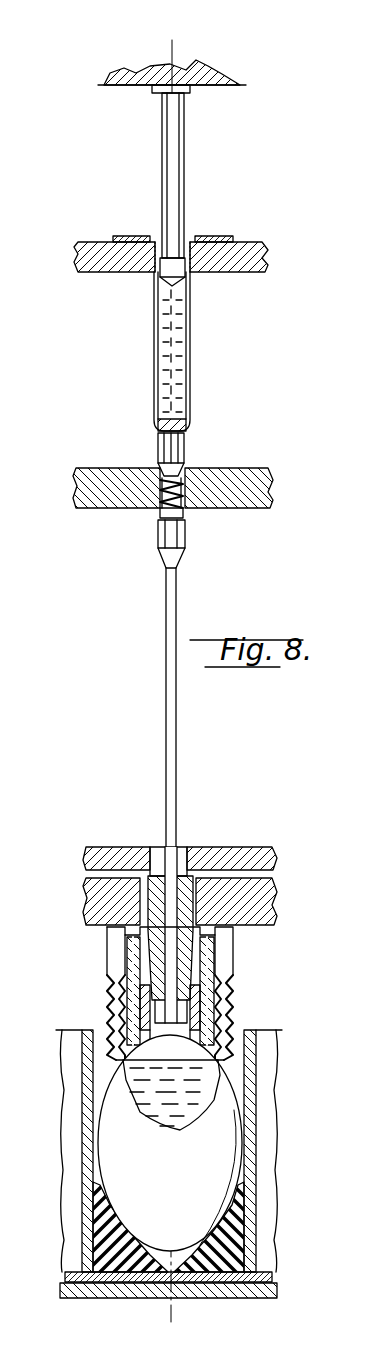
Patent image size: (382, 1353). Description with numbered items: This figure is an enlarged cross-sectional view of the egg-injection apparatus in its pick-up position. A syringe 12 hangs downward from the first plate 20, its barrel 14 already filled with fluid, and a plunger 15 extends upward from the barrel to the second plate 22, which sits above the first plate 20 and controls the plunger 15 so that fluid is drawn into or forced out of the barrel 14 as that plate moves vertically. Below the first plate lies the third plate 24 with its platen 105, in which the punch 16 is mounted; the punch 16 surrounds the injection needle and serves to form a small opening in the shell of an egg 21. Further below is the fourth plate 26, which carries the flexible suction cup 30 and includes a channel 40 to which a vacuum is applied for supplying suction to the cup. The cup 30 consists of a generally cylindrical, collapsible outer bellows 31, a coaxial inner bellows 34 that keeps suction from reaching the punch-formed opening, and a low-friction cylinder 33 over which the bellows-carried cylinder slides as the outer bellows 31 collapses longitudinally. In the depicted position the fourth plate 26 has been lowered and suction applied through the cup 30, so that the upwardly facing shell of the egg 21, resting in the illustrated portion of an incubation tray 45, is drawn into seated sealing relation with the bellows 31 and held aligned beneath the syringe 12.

The syringe 12 is at (196, 318).
The barrel 14 is at (155, 352).
The plunger 15 is at (179, 153).
The punch 16 is at (165, 688).
The first plate 20 is at (98, 238).
The egg 21 is at (148, 1163).
The second plate 22 is at (140, 58).
The third plate 24 is at (100, 462).
The fourth plate 26 is at (110, 843).
The suction cup 30 is at (100, 972).
The outer bellows 31 is at (108, 1000).
The cylinder 33 is at (108, 1015).
The inner bellows 34 is at (216, 1010).
The channel 40 is at (228, 852).
The incubation tray 45 is at (256, 1085).
The platen 105 is at (243, 470).